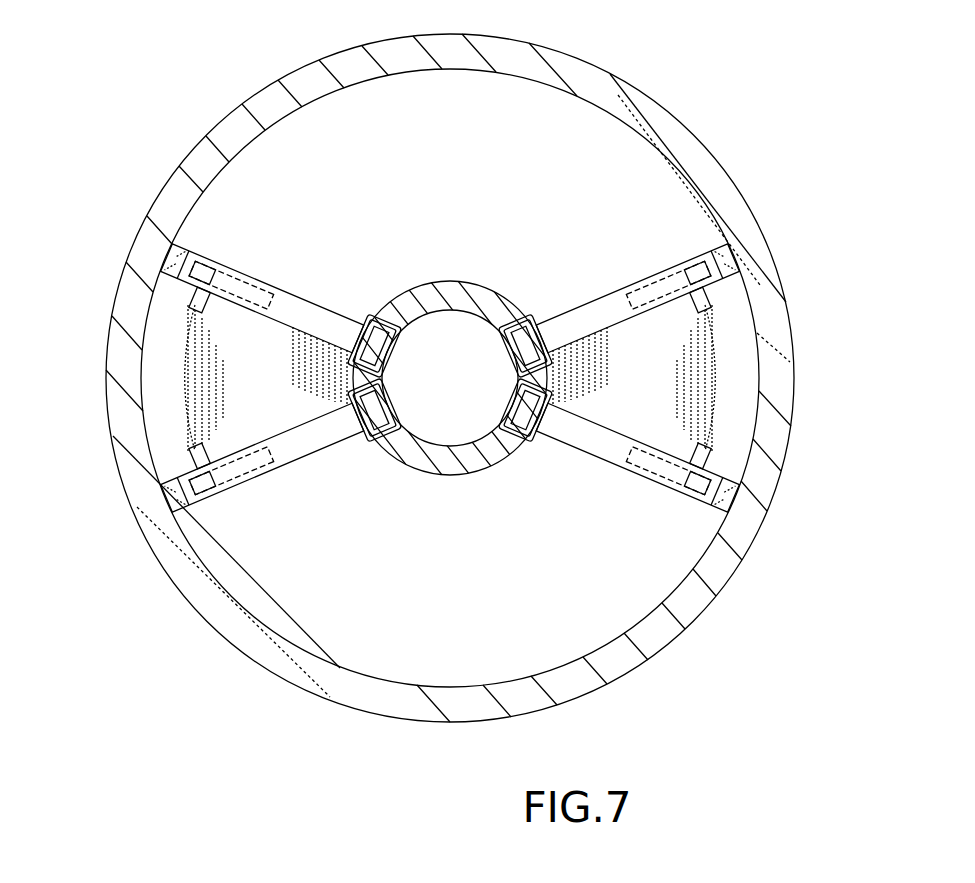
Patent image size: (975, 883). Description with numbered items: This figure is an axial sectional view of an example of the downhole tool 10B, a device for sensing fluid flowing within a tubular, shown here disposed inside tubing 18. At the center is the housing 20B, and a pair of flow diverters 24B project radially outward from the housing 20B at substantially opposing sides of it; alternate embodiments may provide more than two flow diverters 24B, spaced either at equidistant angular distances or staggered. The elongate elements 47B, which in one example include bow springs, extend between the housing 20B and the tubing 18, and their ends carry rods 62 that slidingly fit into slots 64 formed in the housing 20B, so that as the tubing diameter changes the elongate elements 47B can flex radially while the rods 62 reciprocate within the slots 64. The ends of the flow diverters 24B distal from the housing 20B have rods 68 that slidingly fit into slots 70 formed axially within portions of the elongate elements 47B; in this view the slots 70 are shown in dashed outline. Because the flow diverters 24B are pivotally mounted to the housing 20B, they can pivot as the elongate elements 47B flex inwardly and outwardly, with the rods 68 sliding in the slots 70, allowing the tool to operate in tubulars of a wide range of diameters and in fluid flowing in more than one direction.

The downhole tool 10B is at (350, 150).
The tubing 18 is at (607, 92).
The housing 20B is at (461, 478).
The flow diverters 24B is at (631, 345).
The elongate elements 47B is at (308, 298).
The rods 62 is at (528, 318).
The slots 64 is at (510, 348).
The rods 68 is at (198, 302).
The slots 70 is at (240, 270).